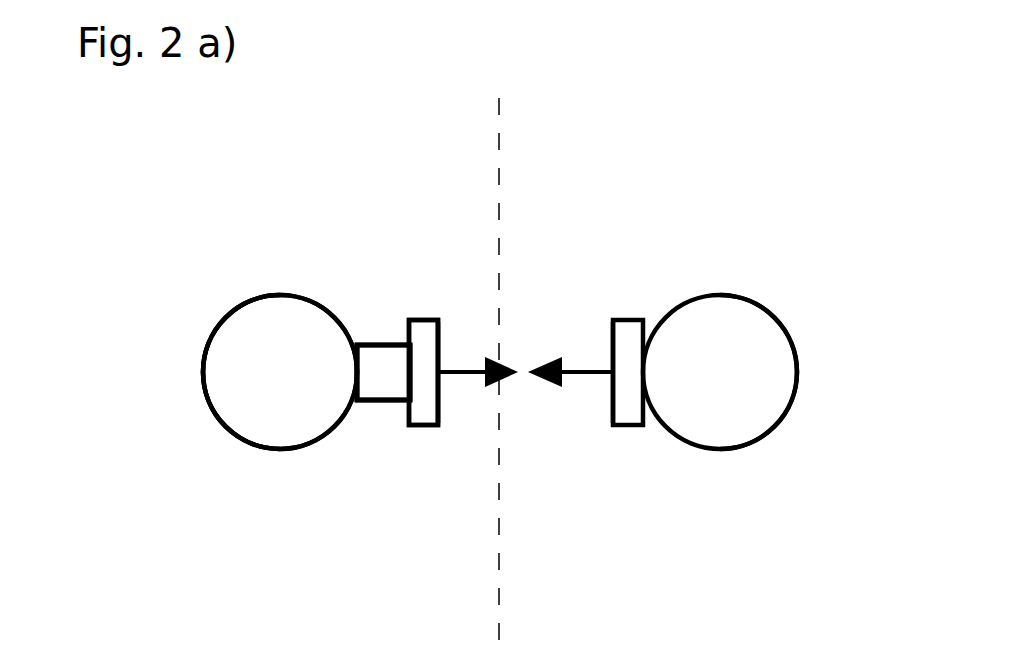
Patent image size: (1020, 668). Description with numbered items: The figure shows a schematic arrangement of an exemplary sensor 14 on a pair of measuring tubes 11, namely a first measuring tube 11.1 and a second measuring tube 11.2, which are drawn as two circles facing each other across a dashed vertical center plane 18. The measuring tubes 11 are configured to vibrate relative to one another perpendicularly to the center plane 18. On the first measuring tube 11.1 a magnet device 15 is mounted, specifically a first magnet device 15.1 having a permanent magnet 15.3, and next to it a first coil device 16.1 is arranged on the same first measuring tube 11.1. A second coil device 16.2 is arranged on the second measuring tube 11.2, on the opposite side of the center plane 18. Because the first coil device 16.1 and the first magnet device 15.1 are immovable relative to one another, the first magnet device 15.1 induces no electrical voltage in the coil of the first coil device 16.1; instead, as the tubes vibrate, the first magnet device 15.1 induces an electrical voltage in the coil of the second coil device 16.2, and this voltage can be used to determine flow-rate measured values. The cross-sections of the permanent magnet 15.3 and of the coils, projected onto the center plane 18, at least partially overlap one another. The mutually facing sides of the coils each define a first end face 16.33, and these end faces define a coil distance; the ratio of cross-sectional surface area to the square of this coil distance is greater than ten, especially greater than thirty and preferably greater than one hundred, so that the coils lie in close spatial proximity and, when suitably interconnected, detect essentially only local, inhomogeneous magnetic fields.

The measuring tube 11 is at (238, 292).
The first measuring tube 11.1 is at (182, 347).
The second measuring tube 11.2 is at (768, 295).
The sensor 14 is at (333, 499).
The magnet device 15 is at (383, 320).
The first magnet device 15.1 is at (359, 273).
The permanent magnet 15.3 is at (424, 273).
The first coil device 16.1 is at (413, 437).
The second coil device 16.2 is at (603, 435).
The first end face 16.33 is at (613, 320).
The center plane 18 is at (528, 205).